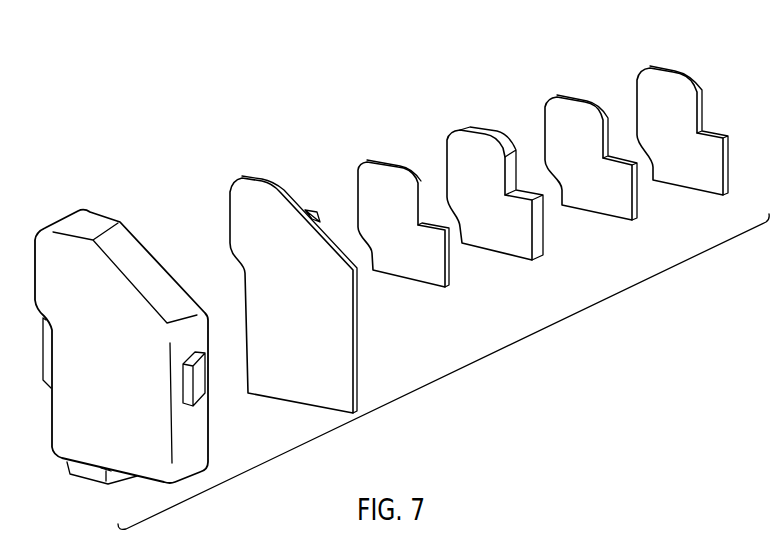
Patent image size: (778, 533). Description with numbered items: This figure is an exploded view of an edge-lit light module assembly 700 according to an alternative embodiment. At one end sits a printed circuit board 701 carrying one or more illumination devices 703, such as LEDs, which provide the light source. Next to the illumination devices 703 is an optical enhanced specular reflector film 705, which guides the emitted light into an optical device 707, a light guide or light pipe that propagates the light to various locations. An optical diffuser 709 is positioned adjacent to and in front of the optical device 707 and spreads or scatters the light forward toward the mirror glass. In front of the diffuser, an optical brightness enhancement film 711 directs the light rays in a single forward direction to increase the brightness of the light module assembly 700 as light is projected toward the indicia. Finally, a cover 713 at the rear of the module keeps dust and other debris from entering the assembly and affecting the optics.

The light module assembly 700 is at (448, 378).
The printed circuit board 701 is at (237, 188).
The illumination devices 703 is at (310, 211).
The optical enhanced specular reflector film 705 is at (365, 171).
The optical device 707 is at (455, 145).
The optical diffuser 709 is at (555, 108).
The optical brightness enhancement film 711 is at (645, 82).
The cover 713 is at (36, 243).